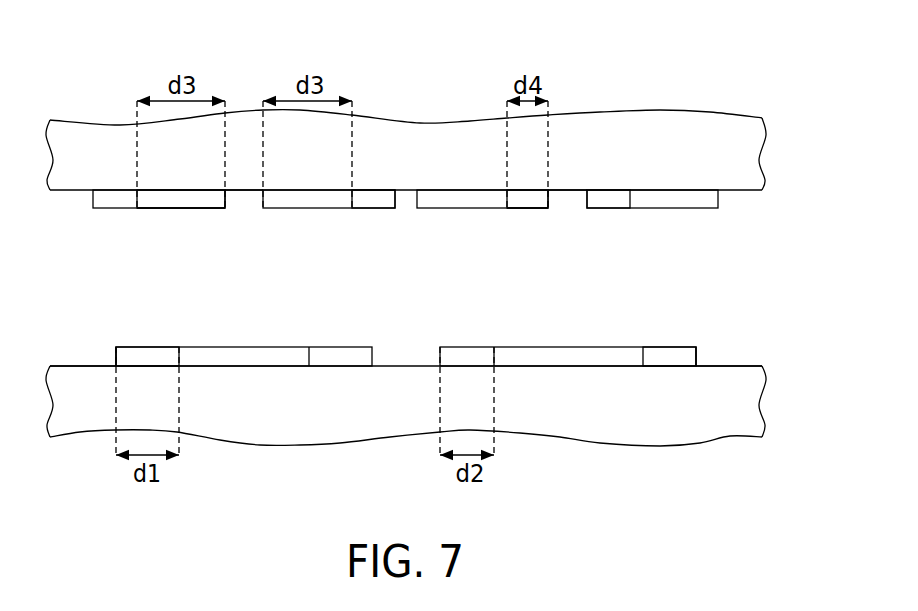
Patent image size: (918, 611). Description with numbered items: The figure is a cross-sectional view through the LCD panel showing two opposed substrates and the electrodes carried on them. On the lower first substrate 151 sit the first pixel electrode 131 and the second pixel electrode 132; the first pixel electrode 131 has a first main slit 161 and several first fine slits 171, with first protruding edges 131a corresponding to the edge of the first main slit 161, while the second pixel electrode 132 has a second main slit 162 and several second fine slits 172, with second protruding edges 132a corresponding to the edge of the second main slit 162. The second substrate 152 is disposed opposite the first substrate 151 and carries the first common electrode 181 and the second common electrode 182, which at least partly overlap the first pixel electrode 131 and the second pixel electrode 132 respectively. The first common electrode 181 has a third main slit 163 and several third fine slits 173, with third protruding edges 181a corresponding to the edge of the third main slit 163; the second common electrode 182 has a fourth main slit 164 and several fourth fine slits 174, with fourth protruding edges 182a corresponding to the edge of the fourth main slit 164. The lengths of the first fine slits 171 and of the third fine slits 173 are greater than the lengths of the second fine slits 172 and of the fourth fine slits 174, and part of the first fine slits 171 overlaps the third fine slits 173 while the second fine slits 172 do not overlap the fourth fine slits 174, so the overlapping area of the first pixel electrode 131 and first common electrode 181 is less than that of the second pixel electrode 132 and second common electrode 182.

The first pixel electrode 131 is at (240, 360).
The first protruding edges 131a is at (163, 353).
The second pixel electrode 132 is at (562, 358).
The second protruding edges 132a is at (675, 350).
The first substrate 151 is at (730, 433).
The second substrate 152 is at (582, 128).
The first main slit 161 is at (68, 366).
The second main slit 162 is at (743, 366).
The third main slit 163 is at (252, 203).
The fourth main slit 164 is at (577, 203).
The first fine slits 171 is at (140, 357).
The second fine slits 172 is at (672, 357).
The third fine slits 173 is at (202, 200).
The fourth fine slits 174 is at (525, 200).
The first common electrode 181 is at (112, 195).
The third protruding edges 181a is at (185, 204).
The second common electrode 182 is at (465, 195).
The fourth protruding edges 182a is at (512, 202).